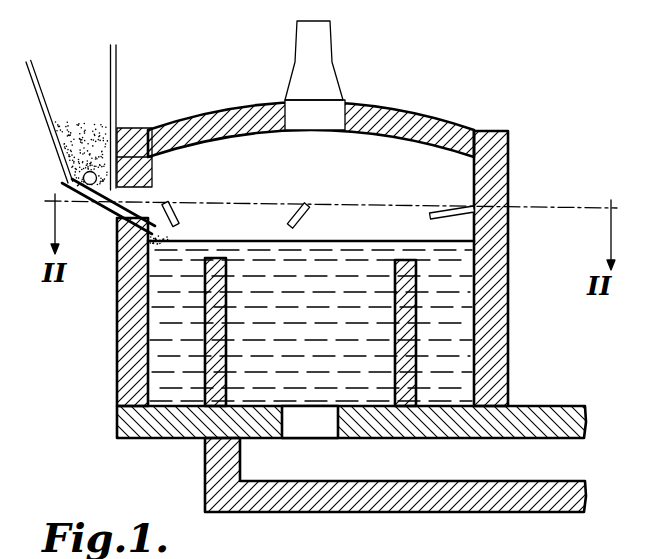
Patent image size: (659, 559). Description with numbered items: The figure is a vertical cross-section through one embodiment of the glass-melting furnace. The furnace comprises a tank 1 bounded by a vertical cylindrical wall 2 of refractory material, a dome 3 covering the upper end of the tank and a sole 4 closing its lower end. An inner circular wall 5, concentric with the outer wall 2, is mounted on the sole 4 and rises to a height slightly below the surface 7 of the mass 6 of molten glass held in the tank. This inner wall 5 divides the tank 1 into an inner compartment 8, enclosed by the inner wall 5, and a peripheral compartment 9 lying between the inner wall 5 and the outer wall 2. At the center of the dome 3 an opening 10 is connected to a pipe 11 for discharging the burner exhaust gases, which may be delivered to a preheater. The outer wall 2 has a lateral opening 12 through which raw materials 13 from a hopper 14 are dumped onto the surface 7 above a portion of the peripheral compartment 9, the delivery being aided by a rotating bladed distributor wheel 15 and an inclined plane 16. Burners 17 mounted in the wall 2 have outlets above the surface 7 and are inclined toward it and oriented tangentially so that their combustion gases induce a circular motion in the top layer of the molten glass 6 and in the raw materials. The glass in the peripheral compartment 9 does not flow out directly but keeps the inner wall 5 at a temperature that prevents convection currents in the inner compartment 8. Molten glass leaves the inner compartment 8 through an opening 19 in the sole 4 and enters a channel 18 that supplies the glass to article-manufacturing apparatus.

The tank 1 is at (508, 176).
The vertical cylindrical wall 2 is at (127, 325).
The dome 3 is at (398, 103).
The sole 4 is at (178, 438).
The inner circular wall 5 is at (218, 322).
The mass of molten glass 6 is at (368, 254).
The surface 7 is at (205, 240).
The inner compartment 8 is at (310, 285).
The peripheral compartment 9 is at (311, 285).
The opening 10 is at (320, 111).
The pipe 11 is at (318, 57).
The lateral opening 12 is at (148, 186).
The raw materials 13 is at (85, 135).
The hopper 14 is at (116, 90).
The rotating bladed distributor wheel 15 is at (83, 179).
The inclined plane 16 is at (113, 209).
The burners 17 is at (177, 211).
The channel 18 is at (540, 480).
The opening 19 is at (297, 418).